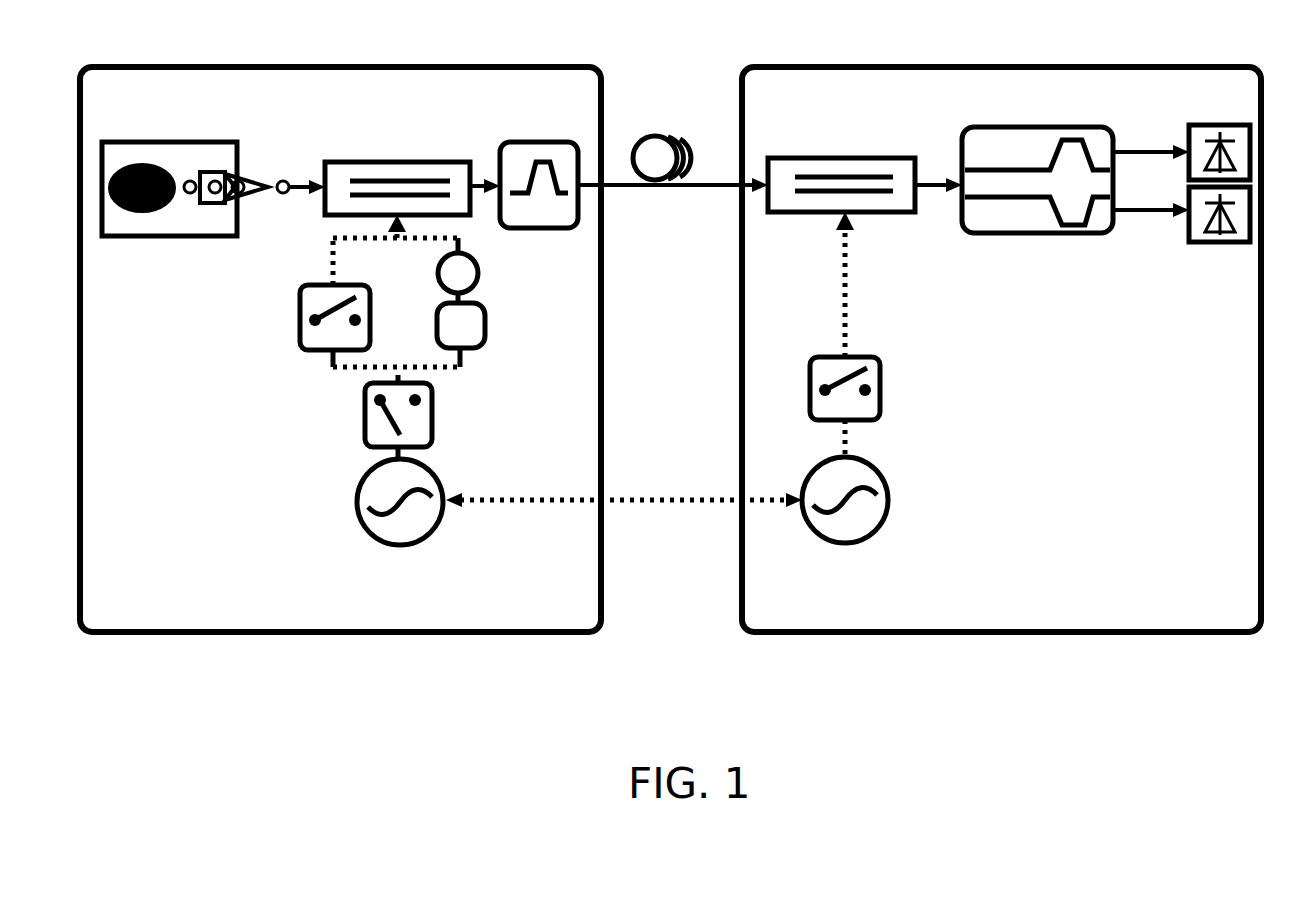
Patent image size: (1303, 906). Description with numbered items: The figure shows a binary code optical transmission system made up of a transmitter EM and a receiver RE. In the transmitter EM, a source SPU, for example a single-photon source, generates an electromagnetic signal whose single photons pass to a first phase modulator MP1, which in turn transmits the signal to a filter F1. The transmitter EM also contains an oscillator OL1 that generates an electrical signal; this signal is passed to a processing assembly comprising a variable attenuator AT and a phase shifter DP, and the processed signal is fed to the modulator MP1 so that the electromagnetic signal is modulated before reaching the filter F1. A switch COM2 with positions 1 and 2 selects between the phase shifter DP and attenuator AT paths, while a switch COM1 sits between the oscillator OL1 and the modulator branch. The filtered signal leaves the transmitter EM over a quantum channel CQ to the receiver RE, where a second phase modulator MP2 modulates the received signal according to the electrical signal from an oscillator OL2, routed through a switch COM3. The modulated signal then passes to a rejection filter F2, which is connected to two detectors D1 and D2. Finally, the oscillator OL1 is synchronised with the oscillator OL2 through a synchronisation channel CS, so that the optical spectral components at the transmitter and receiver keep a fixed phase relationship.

The transmitter EM is at (186, 673).
The receiver RE is at (1032, 662).
The source SPU is at (213, 166).
The first phase modulator MP1 is at (412, 177).
The filter F1 is at (634, 162).
The quantum channel CQ is at (662, 185).
The second phase modulator MP2 is at (865, 235).
The rejection filter F2 is at (1075, 159).
The detector D1 is at (1219, 131).
The detector D2 is at (1219, 237).
The first switch COM1 is at (342, 417).
The second switch COM2 is at (315, 302).
The third switch COM3 is at (903, 407).
The phase shifter DP is at (490, 270).
The variable attenuator AT is at (486, 335).
The oscillator OL1 is at (400, 533).
The oscillator OL2 is at (845, 531).
The synchronisation channel CS is at (624, 482).
The switch position 1 is at (318, 378).
The switch position 2 is at (474, 381).